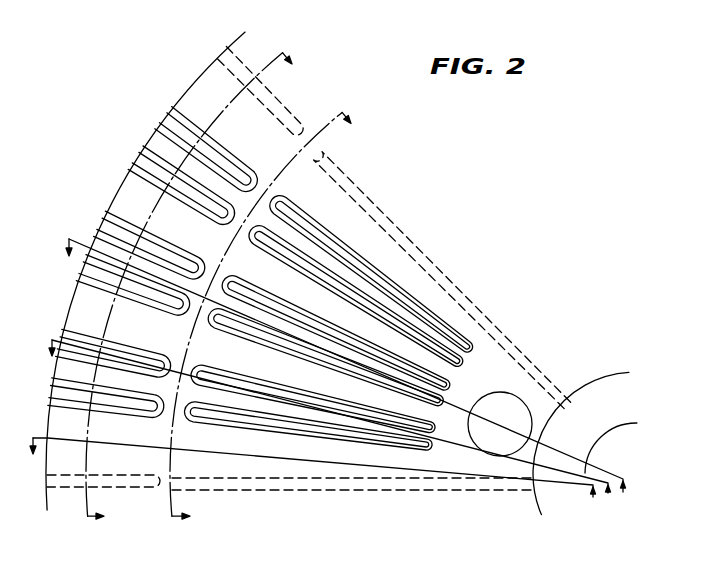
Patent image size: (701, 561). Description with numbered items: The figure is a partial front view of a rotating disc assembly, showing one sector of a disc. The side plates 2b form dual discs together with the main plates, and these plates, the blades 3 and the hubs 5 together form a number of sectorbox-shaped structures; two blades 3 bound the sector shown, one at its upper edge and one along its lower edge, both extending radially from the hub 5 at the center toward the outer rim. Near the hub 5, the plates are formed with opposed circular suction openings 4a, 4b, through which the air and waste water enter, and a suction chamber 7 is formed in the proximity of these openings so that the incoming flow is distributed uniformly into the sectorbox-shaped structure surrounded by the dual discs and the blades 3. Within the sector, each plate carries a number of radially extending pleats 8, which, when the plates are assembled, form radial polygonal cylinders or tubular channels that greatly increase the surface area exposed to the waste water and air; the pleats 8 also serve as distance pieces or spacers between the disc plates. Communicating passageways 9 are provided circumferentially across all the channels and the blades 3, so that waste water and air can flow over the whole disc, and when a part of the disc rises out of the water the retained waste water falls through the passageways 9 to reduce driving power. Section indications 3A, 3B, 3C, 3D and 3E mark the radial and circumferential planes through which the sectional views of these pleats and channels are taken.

The side plate 2b is at (132, 200).
The blade 3 is at (273, 92).
The section line 3A is at (354, 354).
The section line 3B is at (332, 422).
The section line 3C is at (306, 464).
The section line 3D is at (192, 285).
The section line 3E is at (271, 322).
The circular suction opening 4a is at (523, 373).
The circular suction opening 4b is at (503, 407).
The hub 5 is at (593, 398).
The suction chamber 7 is at (448, 457).
The pleat 8 is at (176, 135).
The communicating passageway 9 is at (318, 146).